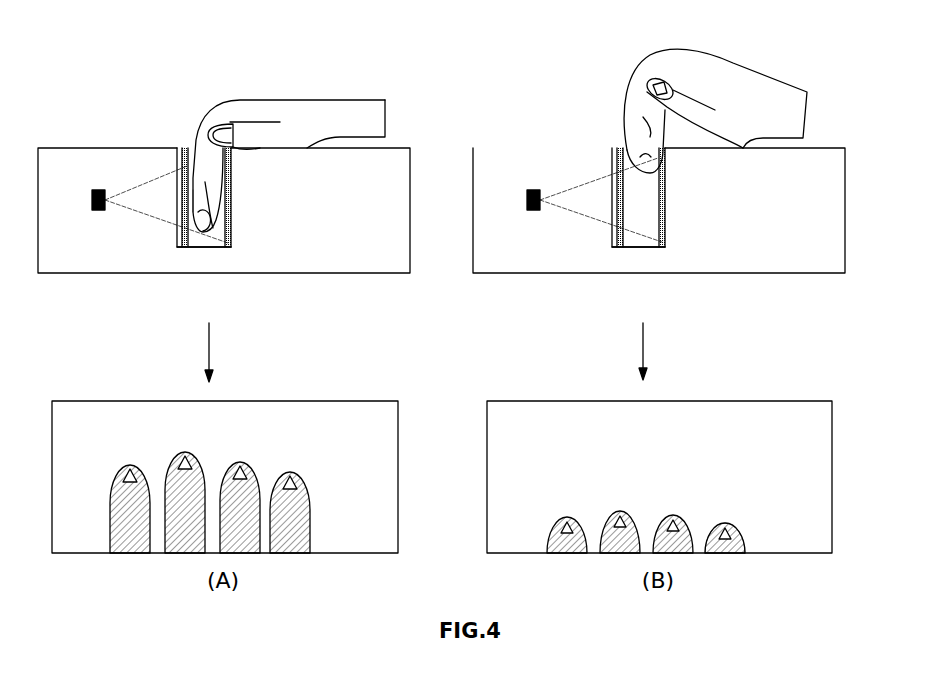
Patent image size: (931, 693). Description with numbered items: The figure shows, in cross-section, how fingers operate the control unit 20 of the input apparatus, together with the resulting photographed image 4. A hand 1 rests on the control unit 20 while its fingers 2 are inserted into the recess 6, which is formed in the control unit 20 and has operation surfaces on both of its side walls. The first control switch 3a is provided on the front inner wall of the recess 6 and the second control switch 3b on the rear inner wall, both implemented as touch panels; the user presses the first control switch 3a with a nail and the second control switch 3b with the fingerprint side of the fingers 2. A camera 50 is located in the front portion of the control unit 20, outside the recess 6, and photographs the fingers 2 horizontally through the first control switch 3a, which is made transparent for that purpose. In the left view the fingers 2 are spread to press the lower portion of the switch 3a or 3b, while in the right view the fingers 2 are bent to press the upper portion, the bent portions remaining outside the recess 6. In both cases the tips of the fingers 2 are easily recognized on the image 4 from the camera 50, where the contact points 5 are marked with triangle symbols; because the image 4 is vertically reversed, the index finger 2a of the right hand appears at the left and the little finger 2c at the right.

The hand 1 is at (285, 100).
The fingers 2 is at (220, 243).
The index finger 2a is at (122, 512).
The little finger 2c is at (745, 545).
The first control switch 3a is at (174, 244).
The second control switch 3b is at (232, 217).
The image 4 is at (758, 400).
The contact points 5 is at (306, 489).
The recess 6 is at (195, 150).
The control unit 20 is at (410, 220).
The camera 50 is at (98, 190).